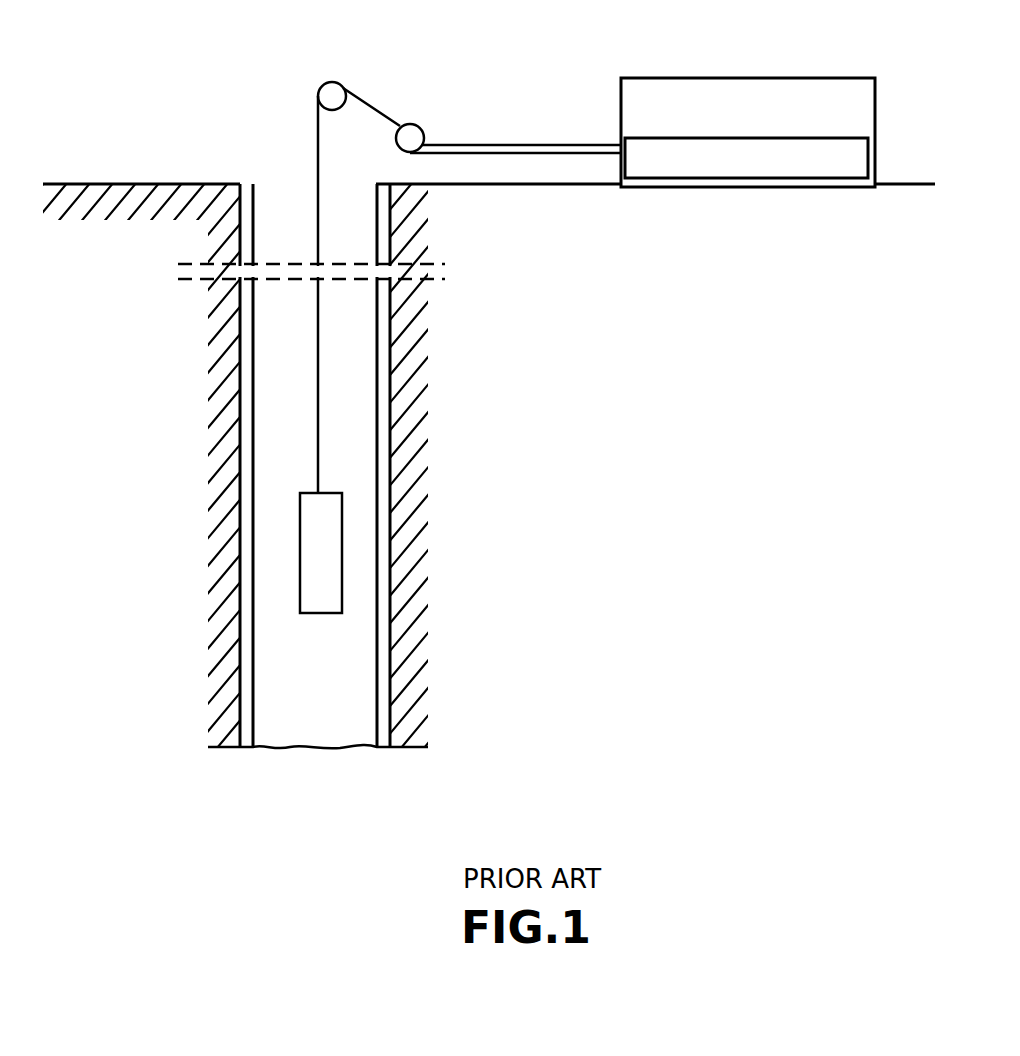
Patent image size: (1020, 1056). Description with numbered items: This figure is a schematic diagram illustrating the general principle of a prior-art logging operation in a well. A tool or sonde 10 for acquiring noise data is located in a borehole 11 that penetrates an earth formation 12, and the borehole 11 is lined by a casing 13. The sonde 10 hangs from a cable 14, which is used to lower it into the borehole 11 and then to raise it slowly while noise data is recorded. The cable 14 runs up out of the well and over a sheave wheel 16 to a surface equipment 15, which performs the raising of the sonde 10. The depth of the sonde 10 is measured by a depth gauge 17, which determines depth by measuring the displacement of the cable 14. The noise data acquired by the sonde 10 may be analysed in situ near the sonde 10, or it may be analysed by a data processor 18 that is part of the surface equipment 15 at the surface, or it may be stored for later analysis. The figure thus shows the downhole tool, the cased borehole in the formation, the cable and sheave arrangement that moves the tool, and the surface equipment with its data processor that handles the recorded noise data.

The sonde 10 is at (333, 492).
The borehole 11 is at (304, 701).
The earth formation 12 is at (407, 588).
The casing 13 is at (385, 667).
The cable 14 is at (322, 399).
The surface equipment 15 is at (707, 78).
The sheave wheel 16 is at (338, 83).
The depth gauge 17 is at (407, 123).
The data processor 18 is at (752, 180).